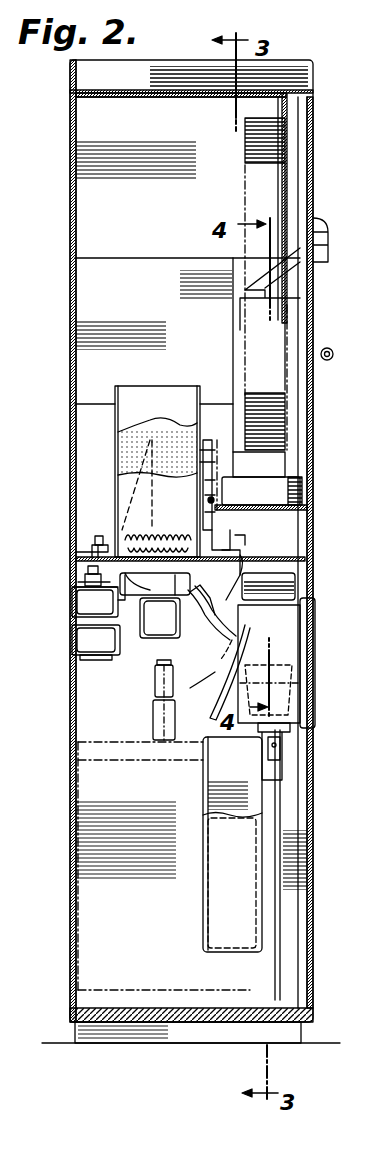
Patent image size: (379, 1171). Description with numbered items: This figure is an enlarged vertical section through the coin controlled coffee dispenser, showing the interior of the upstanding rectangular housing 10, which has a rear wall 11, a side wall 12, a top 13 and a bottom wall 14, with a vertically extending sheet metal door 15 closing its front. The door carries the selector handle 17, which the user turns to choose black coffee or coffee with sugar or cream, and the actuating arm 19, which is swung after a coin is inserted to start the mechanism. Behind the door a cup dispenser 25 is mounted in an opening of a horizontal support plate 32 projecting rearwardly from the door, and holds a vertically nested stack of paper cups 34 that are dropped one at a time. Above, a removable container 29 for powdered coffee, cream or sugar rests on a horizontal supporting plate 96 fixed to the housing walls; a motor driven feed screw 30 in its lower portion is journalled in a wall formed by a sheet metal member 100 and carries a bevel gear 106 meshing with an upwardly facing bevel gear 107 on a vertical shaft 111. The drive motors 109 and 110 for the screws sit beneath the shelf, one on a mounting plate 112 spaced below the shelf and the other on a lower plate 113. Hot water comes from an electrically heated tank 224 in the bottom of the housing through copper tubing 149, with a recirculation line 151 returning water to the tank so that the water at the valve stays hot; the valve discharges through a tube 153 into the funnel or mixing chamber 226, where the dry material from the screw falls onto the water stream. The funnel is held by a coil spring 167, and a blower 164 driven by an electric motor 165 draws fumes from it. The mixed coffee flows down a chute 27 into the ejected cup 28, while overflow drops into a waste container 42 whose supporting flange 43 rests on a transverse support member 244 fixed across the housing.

The housing 10 is at (66, 665).
The rear wall 11 is at (70, 252).
The side wall 12 is at (88, 137).
The top 13 is at (92, 60).
The bottom wall 14 is at (127, 1005).
The door 15 is at (313, 831).
The selector handle 17 is at (328, 232).
The actuating arm 19 is at (334, 354).
The cup dispenser 25 is at (288, 462).
The chute 27 is at (184, 645).
The cup 28 is at (300, 686).
The container 29 is at (135, 390).
The feed screw 30 is at (140, 533).
The support plate 32 is at (300, 517).
The paper cups 34 is at (245, 148).
The waste container 42 is at (203, 795).
The supporting flange 43 is at (284, 745).
The supporting plate 96 is at (74, 552).
The sheet metal member 100 is at (214, 540).
The bevel gear 106 is at (94, 528).
The bevel gear 107 is at (104, 535).
The drive motor 109 is at (90, 660).
The drive motor 110 is at (80, 607).
The shaft 111 is at (80, 570).
The mounting plate 112 is at (82, 582).
The lower plate 113 is at (82, 628).
The copper tubing 149 is at (155, 680).
The recirculation line 151 is at (153, 712).
The tube 153 is at (250, 562).
The blower 164 is at (80, 592).
The electric motor 165 is at (160, 642).
The coil spring 167 is at (192, 570).
The tank 224 is at (82, 890).
The funnel 226 is at (212, 612).
The transverse support member 244 is at (290, 728).